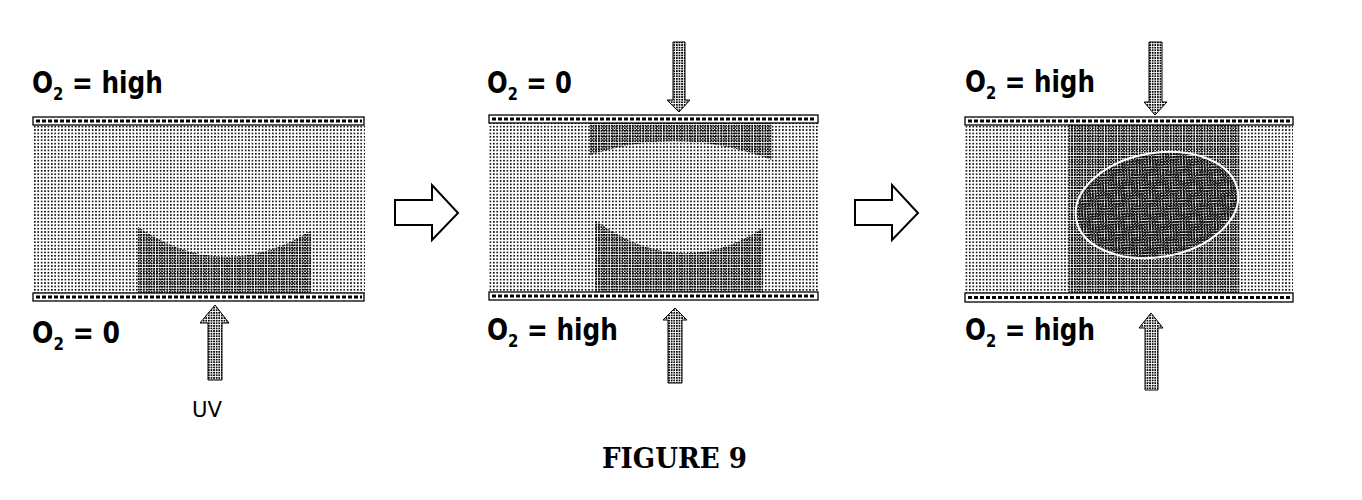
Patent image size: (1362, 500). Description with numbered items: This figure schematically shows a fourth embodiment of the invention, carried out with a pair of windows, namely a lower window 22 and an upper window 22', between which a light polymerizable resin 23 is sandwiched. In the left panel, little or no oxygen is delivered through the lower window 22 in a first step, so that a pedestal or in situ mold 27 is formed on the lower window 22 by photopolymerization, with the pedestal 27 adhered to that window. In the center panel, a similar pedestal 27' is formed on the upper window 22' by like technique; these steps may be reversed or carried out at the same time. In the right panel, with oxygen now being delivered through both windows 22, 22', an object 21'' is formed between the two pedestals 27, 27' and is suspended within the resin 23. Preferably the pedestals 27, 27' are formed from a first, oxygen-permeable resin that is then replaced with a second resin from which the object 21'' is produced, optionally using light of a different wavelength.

The lower window 22 is at (663, 325).
The upper window 22' is at (663, 94).
The light polymerizable resin 23 is at (663, 208).
The pedestal or in situ mold 27 is at (715, 232).
The pedestal 27' is at (945, 111).
The object 21'' is at (1204, 205).